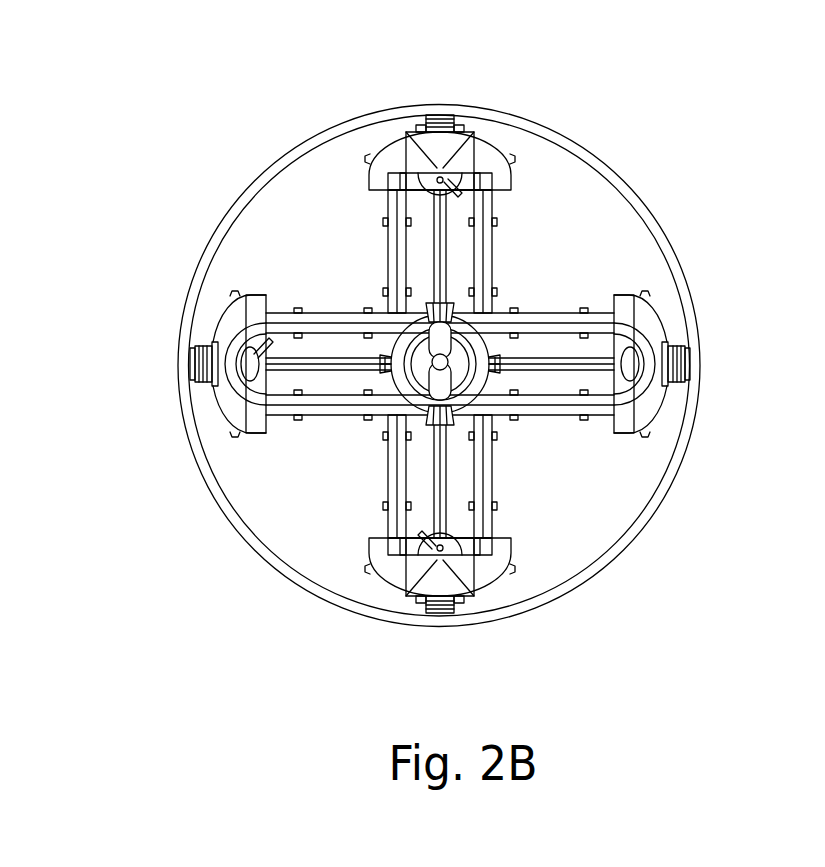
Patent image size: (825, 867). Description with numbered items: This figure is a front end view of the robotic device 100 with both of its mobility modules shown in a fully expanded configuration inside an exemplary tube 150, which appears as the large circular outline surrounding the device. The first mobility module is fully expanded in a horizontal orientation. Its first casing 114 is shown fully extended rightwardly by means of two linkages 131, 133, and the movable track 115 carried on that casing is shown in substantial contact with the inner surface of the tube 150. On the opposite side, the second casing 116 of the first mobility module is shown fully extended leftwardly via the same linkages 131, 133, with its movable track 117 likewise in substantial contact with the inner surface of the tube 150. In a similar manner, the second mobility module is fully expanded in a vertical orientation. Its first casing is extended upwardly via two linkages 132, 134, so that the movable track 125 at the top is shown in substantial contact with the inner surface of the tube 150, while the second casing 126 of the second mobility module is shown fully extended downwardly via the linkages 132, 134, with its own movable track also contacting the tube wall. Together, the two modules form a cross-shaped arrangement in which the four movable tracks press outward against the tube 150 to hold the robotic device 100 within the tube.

The robotic device 100 is at (345, 365).
The first casing 114 is at (688, 375).
The movable track 115 is at (723, 354).
The second casing 116 is at (185, 380).
The movable track 117 is at (160, 352).
The movable track 125 is at (444, 81).
The second casing 126 is at (426, 126).
The linkage 131 is at (425, 501).
The linkage 132 is at (298, 216).
The linkage 133 is at (396, 262).
The linkage 134 is at (517, 213).
The tube 150 is at (657, 225).